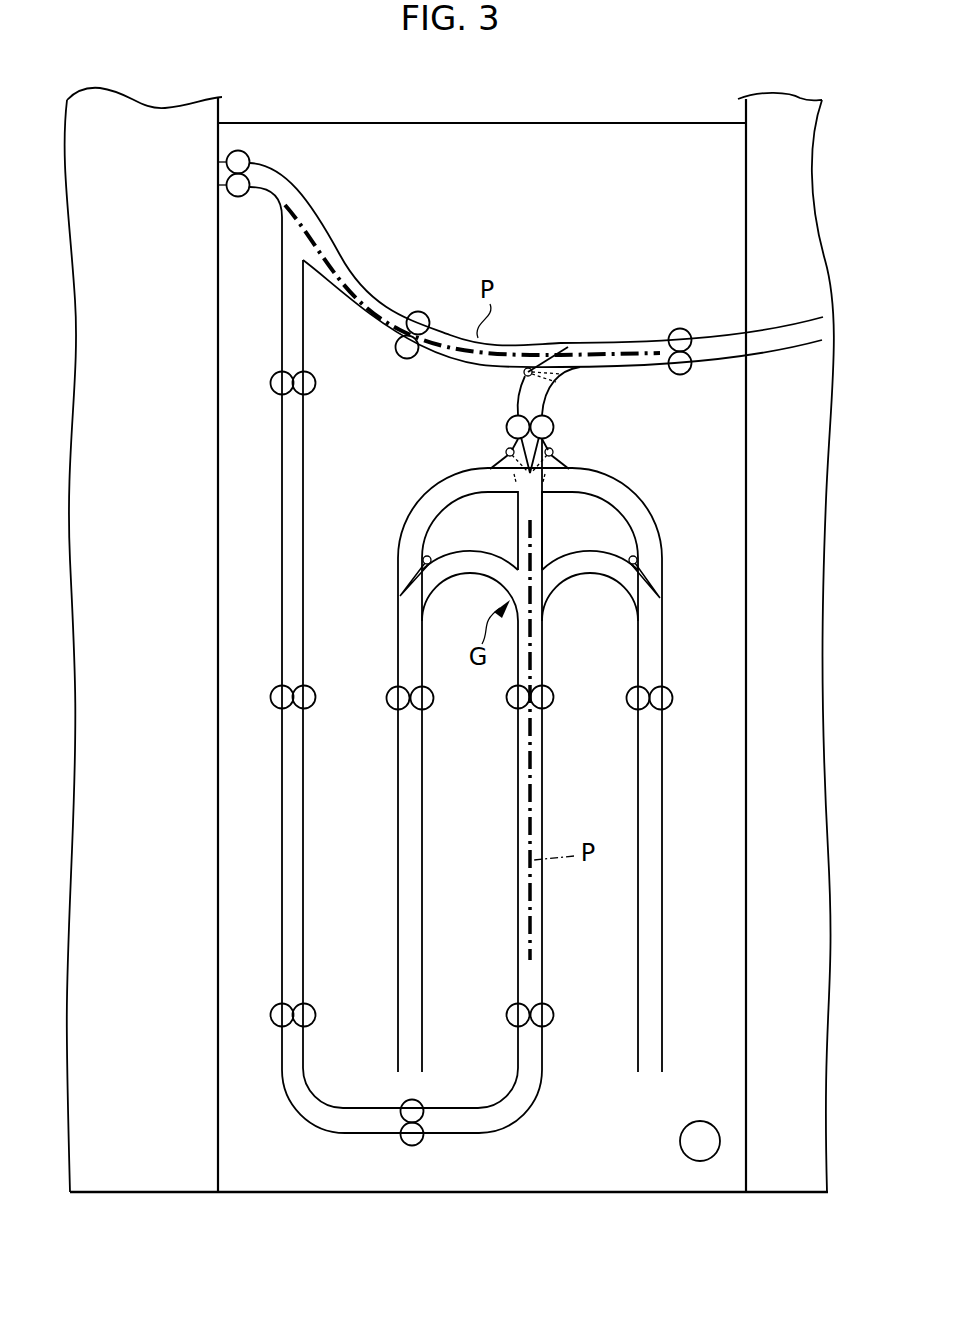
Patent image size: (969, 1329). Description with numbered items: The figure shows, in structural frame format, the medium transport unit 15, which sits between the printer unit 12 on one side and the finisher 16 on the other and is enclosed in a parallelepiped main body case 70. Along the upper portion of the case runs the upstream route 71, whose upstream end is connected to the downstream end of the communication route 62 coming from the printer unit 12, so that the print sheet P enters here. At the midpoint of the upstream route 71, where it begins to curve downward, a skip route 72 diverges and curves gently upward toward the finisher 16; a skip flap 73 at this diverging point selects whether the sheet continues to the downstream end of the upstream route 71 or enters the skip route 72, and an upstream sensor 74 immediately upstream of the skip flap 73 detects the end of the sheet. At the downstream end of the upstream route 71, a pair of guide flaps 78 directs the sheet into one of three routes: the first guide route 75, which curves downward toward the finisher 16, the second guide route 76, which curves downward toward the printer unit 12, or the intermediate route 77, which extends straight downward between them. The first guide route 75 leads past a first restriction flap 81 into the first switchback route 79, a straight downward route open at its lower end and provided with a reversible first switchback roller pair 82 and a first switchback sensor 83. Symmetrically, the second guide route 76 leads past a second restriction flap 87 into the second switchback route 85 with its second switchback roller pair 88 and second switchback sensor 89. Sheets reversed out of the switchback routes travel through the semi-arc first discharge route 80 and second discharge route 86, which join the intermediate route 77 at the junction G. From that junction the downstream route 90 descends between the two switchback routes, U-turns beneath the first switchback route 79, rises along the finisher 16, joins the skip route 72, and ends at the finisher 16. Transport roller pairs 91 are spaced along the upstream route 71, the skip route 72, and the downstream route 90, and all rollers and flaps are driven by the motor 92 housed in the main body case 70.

The printer unit 12 is at (797, 98).
The medium transport unit 15 is at (567, 122).
The finisher 16 is at (145, 98).
The communication route 62 is at (794, 312).
The main body case 70 is at (456, 122).
The upstream route 71 is at (714, 326).
The skip route 72 is at (375, 288).
The skip flap 73 is at (552, 350).
The upstream sensor 74 is at (611, 328).
The first guide route 75 is at (416, 488).
The second guide route 76 is at (628, 476).
The intermediate route 77 is at (556, 517).
The pair of guide flaps 78 is at (500, 452).
The first switchback route 79 is at (386, 796).
The first discharge route 80 is at (468, 585).
The first restriction flap 81 is at (412, 578).
The first switchback roller pair 82 is at (386, 698).
The first switchback sensor 83 is at (384, 649).
The second switchback route 85 is at (678, 798).
The second discharge route 86 is at (592, 585).
The second restriction flap 87 is at (648, 578).
The second switchback roller pair 88 is at (673, 698).
The second switchback sensor 89 is at (676, 649).
The downstream route 90 is at (556, 798).
The transport roller pairs 91 is at (250, 157).
The motor 92 is at (680, 1141).